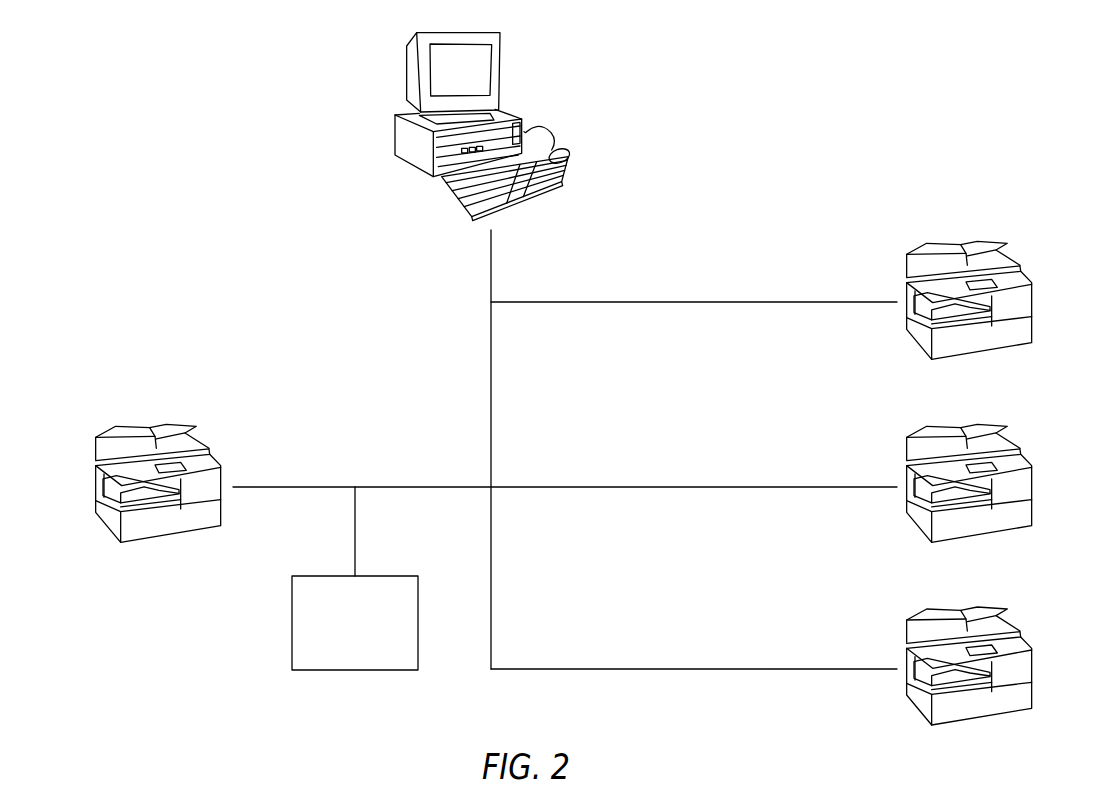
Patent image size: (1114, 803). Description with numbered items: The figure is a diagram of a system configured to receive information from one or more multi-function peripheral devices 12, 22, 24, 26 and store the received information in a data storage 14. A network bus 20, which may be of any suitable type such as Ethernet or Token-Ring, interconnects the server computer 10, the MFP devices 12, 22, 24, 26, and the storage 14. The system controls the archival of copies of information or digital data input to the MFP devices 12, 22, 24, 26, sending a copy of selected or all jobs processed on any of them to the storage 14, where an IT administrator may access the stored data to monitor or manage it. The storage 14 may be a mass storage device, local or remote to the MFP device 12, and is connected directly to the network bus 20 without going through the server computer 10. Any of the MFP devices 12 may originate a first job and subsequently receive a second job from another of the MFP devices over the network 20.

The server computer 10 is at (513, 116).
The multi-function peripheral device 12 is at (200, 445).
The data storage 14 is at (292, 623).
The network bus 20 is at (525, 487).
The multi-function peripheral device 22 is at (1032, 306).
The multi-function peripheral device 24 is at (1032, 492).
The multi-function peripheral device 26 is at (1032, 673).